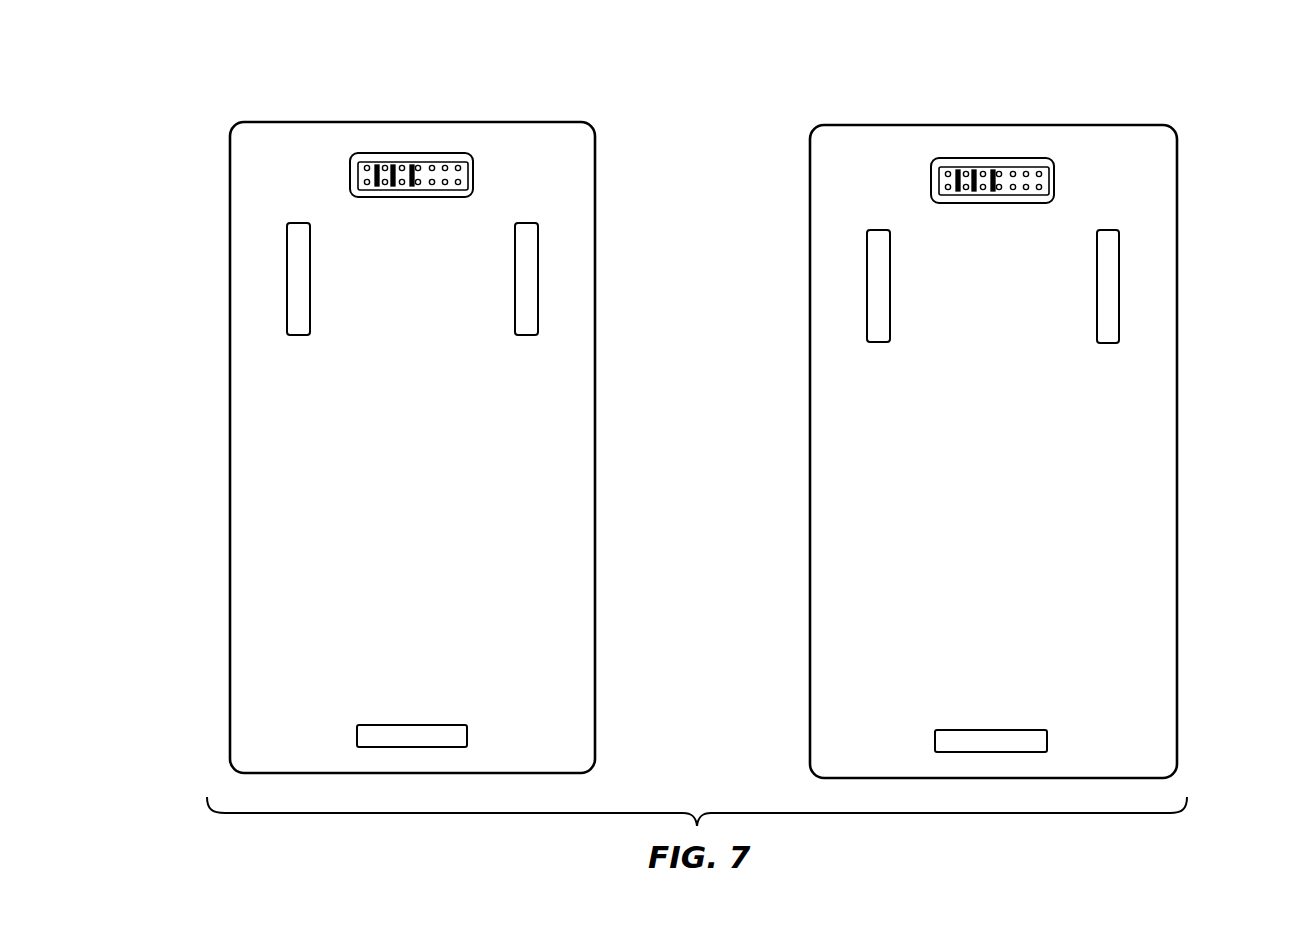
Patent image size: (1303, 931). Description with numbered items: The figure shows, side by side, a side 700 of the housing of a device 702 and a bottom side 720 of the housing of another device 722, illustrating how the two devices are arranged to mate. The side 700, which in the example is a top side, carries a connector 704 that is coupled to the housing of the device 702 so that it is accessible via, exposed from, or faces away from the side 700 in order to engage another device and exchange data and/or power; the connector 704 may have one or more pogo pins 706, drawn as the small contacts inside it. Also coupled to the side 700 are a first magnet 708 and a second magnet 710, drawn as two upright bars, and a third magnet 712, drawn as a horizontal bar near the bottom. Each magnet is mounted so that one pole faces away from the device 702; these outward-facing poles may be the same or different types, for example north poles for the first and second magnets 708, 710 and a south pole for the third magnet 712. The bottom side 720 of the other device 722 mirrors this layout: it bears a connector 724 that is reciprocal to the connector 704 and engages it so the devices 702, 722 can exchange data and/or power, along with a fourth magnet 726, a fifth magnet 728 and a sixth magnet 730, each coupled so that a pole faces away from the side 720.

The side 700 is at (345, 621).
The device 702 is at (553, 73).
The connector 704 is at (412, 198).
The pogo pins 706 is at (357, 182).
The first magnet 708 is at (285, 278).
The second magnet 710 is at (539, 278).
The third magnet 712 is at (412, 725).
The bottom side 720 is at (925, 626).
The another device 722 is at (1135, 78).
The connector 724 is at (992, 204).
The fourth magnet 726 is at (865, 287).
The fifth magnet 728 is at (1120, 287).
The sixth magnet 730 is at (990, 730).